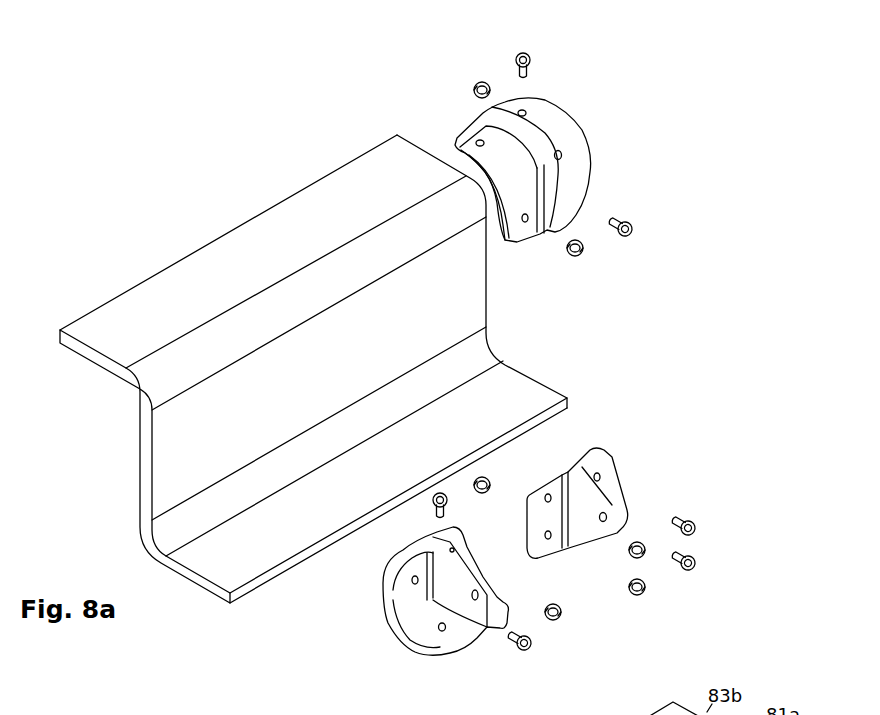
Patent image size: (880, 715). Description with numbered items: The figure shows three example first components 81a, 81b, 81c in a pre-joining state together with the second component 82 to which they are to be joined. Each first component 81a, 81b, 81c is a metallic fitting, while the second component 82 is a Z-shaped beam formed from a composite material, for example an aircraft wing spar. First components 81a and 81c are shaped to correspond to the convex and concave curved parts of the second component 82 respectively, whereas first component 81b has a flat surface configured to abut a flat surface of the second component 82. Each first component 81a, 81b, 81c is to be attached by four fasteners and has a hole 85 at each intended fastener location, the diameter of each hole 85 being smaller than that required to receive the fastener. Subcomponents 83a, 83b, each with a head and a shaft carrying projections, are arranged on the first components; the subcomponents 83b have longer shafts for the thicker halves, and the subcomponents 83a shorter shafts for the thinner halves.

The second component 82 is at (217, 285).
The first component 81a is at (565, 128).
The first component 81b is at (610, 465).
The first component 81c is at (405, 616).
The subcomponent 83a is at (475, 85).
The subcomponent 83b is at (515, 55).
The hole 85 is at (524, 112).